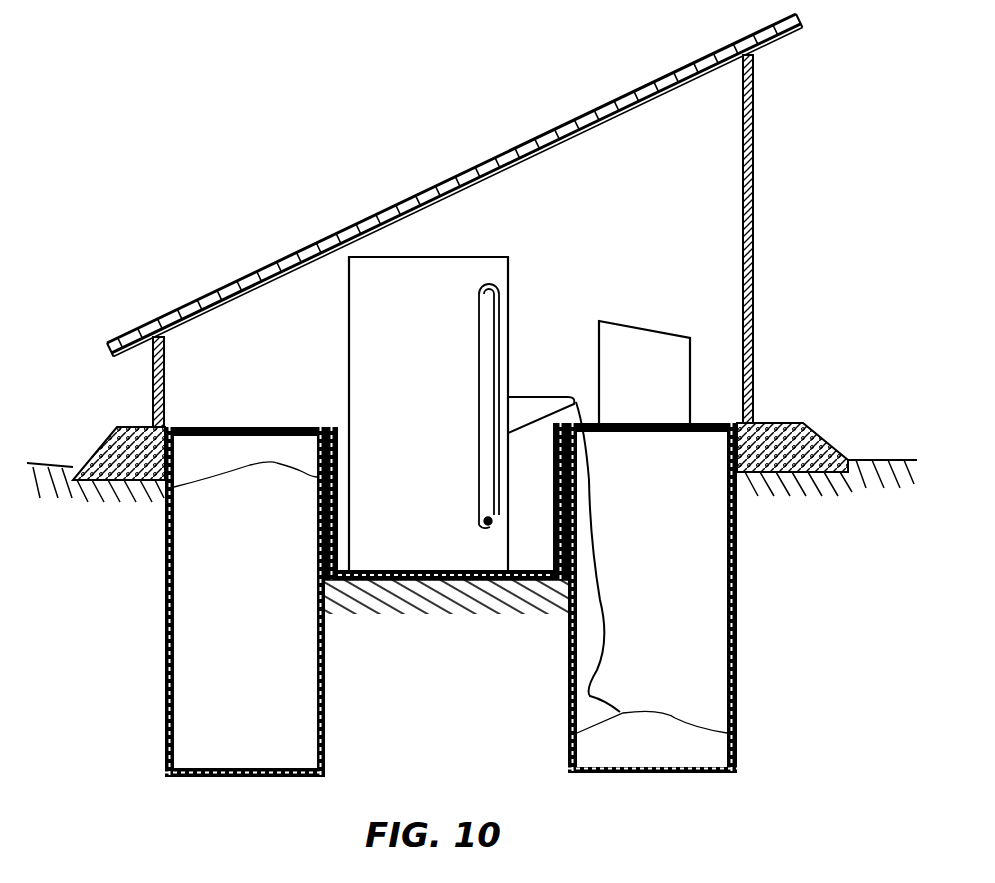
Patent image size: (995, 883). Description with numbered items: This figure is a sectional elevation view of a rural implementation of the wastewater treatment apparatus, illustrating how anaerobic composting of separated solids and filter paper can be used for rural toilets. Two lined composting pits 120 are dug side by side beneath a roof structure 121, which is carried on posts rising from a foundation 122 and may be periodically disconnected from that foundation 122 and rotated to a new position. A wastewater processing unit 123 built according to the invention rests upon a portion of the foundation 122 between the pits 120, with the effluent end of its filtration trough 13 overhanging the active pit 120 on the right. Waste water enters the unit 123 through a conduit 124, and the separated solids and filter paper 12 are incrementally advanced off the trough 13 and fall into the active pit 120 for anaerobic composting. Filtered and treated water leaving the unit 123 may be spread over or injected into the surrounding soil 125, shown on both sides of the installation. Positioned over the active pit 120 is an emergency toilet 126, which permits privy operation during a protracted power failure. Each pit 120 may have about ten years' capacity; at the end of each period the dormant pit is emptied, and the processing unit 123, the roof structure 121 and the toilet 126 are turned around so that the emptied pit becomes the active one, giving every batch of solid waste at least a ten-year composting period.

The roof structure 121 is at (753, 143).
The wastewater processing unit 123 is at (514, 272).
The conduit 124 is at (483, 523).
The filtration trough 13 is at (537, 396).
The solids and filter paper 12 is at (592, 487).
The emergency toilet 126 is at (650, 328).
The lined composting pits 120 is at (174, 487).
The foundation 122 is at (90, 446).
The surrounding soil 125 is at (47, 462).